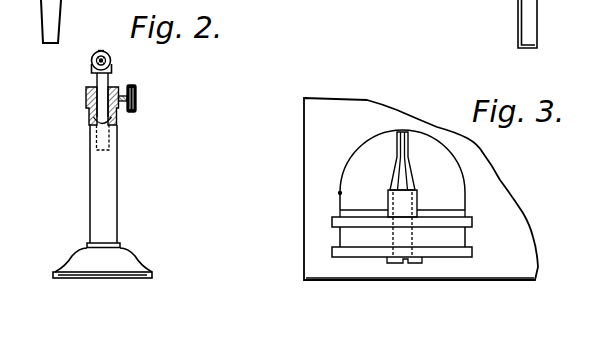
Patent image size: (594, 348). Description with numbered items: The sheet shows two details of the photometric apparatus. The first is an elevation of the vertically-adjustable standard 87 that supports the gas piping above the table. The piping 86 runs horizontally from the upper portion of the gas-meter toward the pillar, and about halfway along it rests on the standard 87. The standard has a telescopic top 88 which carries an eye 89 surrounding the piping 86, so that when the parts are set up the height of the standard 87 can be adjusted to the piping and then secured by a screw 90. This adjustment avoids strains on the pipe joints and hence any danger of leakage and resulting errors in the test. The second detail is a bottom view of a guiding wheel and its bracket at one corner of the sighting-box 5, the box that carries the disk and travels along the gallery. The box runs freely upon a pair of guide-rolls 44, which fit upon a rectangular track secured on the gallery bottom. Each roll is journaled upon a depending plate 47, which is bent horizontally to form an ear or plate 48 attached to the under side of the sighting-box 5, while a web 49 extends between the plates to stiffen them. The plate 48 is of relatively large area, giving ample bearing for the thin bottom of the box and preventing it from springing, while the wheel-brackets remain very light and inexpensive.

In FIG. 2, the piping 86 is at (111, 57).
In FIG. 2, the eye 89 is at (91, 60).
In FIG. 2, the telescopic top 88 is at (103, 85).
In FIG. 2, the standard 87 is at (105, 202).
In FIG. 2, the screw 90 is at (137, 100).
In FIG. 3, the sighting-box 5 is at (421, 189).
In FIG. 3, the ear or plate 48 is at (365, 145).
In FIG. 3, the depending plate 47 is at (363, 210).
In FIG. 3, the web 49 is at (409, 163).
In FIG. 3, the guide-rolls 44 is at (382, 244).